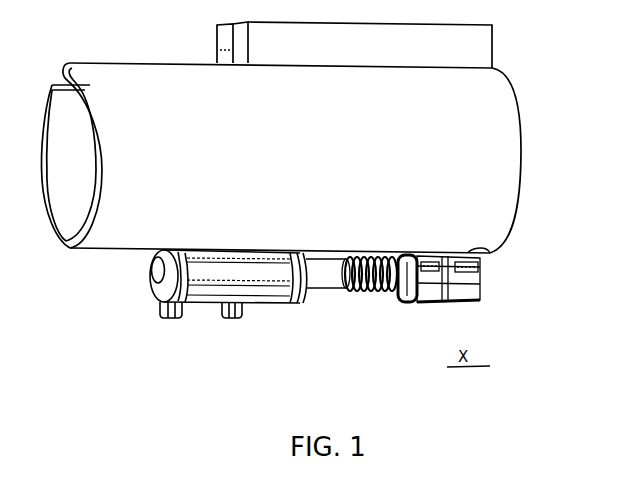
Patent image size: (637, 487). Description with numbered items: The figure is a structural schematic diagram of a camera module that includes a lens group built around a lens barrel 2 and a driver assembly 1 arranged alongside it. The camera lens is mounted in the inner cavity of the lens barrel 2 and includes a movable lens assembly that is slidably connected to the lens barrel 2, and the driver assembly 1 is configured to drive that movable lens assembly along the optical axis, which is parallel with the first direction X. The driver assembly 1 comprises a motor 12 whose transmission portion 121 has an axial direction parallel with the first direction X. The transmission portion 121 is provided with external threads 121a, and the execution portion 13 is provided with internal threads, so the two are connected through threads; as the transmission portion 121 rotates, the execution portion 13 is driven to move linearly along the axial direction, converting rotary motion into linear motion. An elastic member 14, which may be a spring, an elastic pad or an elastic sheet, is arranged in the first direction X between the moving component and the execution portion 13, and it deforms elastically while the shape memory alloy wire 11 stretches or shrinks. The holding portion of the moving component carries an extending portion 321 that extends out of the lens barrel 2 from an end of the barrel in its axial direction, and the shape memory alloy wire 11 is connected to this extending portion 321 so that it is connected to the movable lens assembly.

The driver assembly 1 is at (339, 319).
The lens barrel 2 is at (159, 68).
The shape memory alloy wire 11 is at (491, 252).
The motor 12 is at (285, 301).
The transmission portion 121 is at (328, 283).
The external threads 121a is at (383, 293).
The execution portion 13 is at (410, 300).
The elastic member 14 is at (473, 291).
The extending portion 321 is at (477, 290).